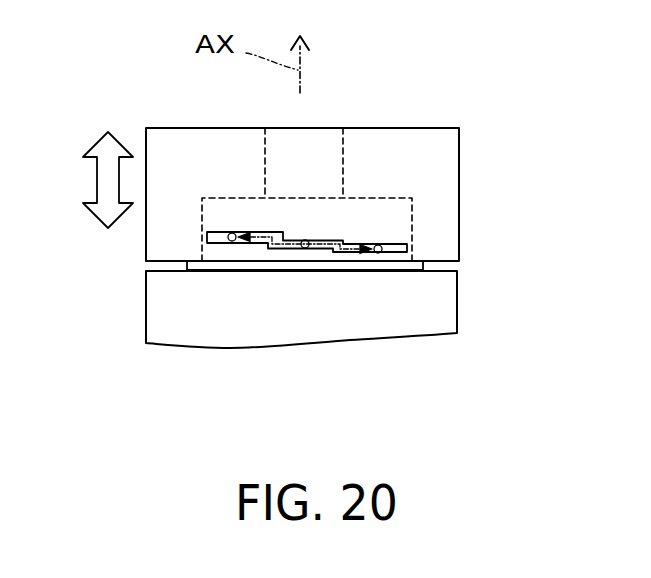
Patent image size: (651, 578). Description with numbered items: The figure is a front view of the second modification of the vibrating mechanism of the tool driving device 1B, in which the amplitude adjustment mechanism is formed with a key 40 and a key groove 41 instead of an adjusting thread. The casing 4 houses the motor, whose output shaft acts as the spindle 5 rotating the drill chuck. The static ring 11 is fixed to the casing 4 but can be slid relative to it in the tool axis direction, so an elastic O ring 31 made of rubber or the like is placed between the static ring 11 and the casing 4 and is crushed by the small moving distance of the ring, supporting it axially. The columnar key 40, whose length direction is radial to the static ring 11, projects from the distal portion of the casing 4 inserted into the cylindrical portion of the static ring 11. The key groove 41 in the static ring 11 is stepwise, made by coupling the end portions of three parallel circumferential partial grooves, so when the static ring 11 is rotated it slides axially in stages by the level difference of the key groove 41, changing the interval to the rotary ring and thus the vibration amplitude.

The tool driving device 1B is at (466, 146).
The static ring 11 is at (459, 205).
The spindle 5 is at (348, 153).
The key 40 is at (306, 249).
The key groove 41 is at (222, 242).
The O ring 31 is at (187, 266).
The casing 4 is at (457, 302).